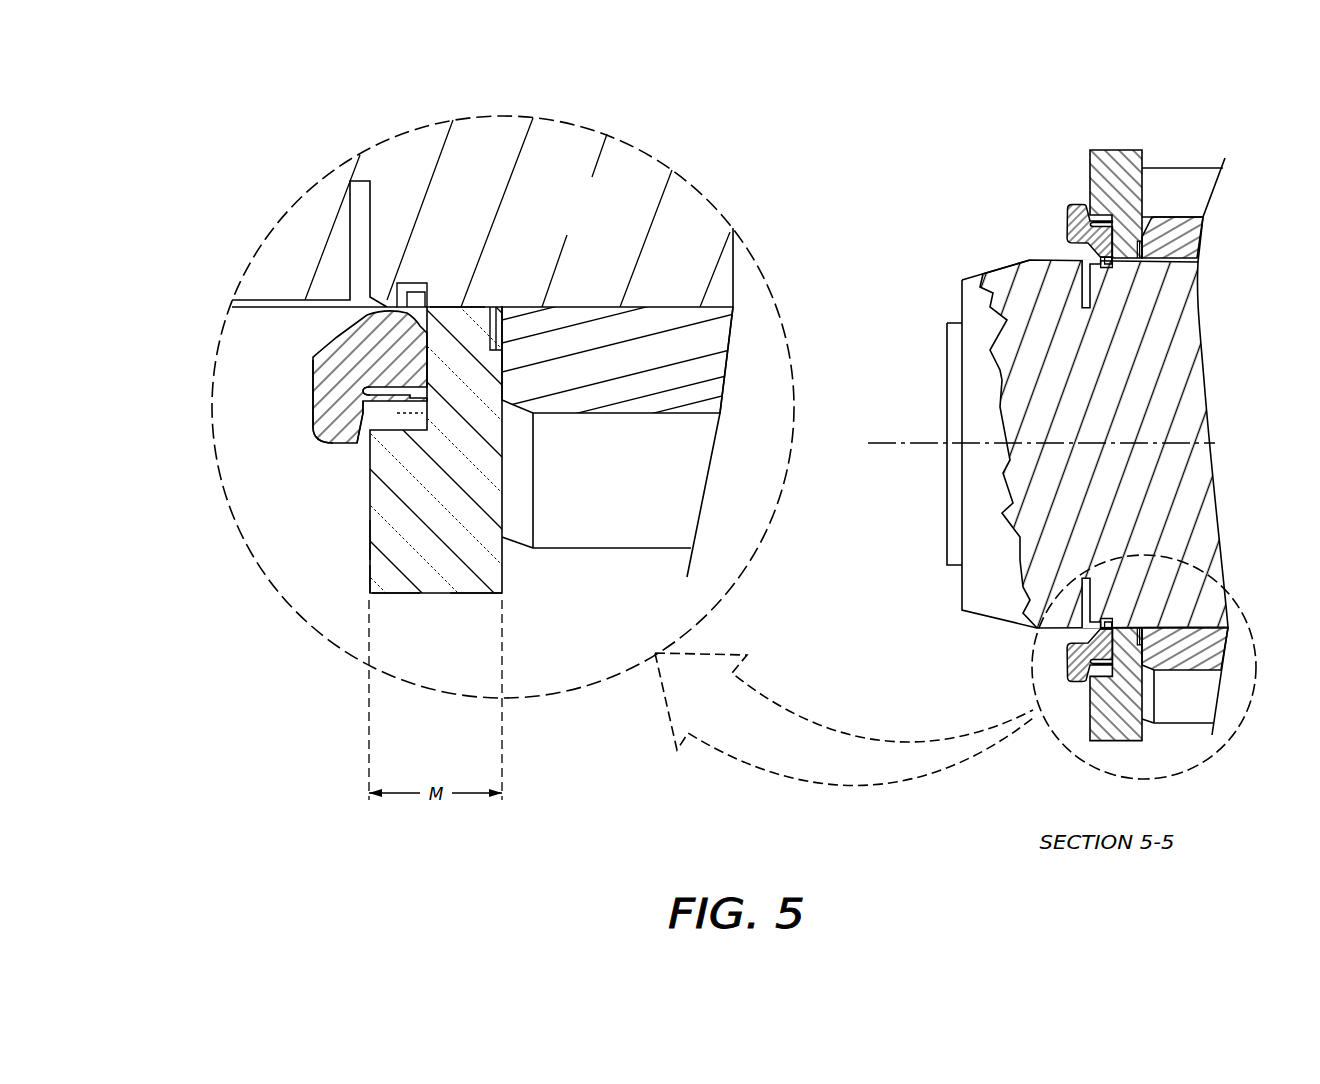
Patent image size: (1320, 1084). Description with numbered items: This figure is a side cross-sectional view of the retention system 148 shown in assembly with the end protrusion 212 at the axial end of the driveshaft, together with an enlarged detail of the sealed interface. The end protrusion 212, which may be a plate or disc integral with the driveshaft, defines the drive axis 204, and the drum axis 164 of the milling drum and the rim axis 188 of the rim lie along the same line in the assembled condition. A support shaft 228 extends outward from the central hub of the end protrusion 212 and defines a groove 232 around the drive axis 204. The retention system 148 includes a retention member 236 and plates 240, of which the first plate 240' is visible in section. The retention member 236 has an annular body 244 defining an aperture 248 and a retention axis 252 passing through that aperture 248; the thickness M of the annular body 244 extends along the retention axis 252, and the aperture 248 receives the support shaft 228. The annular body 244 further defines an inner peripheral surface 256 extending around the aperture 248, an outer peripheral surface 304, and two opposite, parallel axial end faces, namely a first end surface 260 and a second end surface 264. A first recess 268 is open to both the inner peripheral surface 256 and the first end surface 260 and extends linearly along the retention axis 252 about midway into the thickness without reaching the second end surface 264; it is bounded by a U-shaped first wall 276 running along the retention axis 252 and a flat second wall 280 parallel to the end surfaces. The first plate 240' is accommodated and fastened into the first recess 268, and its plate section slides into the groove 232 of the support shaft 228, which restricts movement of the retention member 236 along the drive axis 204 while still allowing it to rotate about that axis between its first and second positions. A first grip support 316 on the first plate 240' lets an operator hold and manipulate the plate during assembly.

The retention system 148 is at (345, 592).
The drum axis 164 is at (880, 443).
The rim axis 188 is at (877, 447).
The drive axis 204 is at (930, 447).
The end protrusion 212 is at (1187, 166).
The support shaft 228 is at (595, 218).
The groove 232 is at (413, 323).
The retention member 236 is at (447, 595).
The plates 240 is at (265, 427).
The first plate 240' is at (292, 420).
The annular body 244 is at (473, 595).
The aperture 248 is at (458, 296).
The retention axis 252 is at (900, 443).
The inner peripheral surface 256 is at (480, 307).
The first end surface 260 is at (357, 583).
The second end surface 264 is at (505, 557).
The first recess 268 is at (316, 433).
The first wall 276 is at (365, 415).
The second wall 280 is at (370, 542).
The outer peripheral surface 304 is at (400, 595).
The first grip support 316 is at (312, 383).